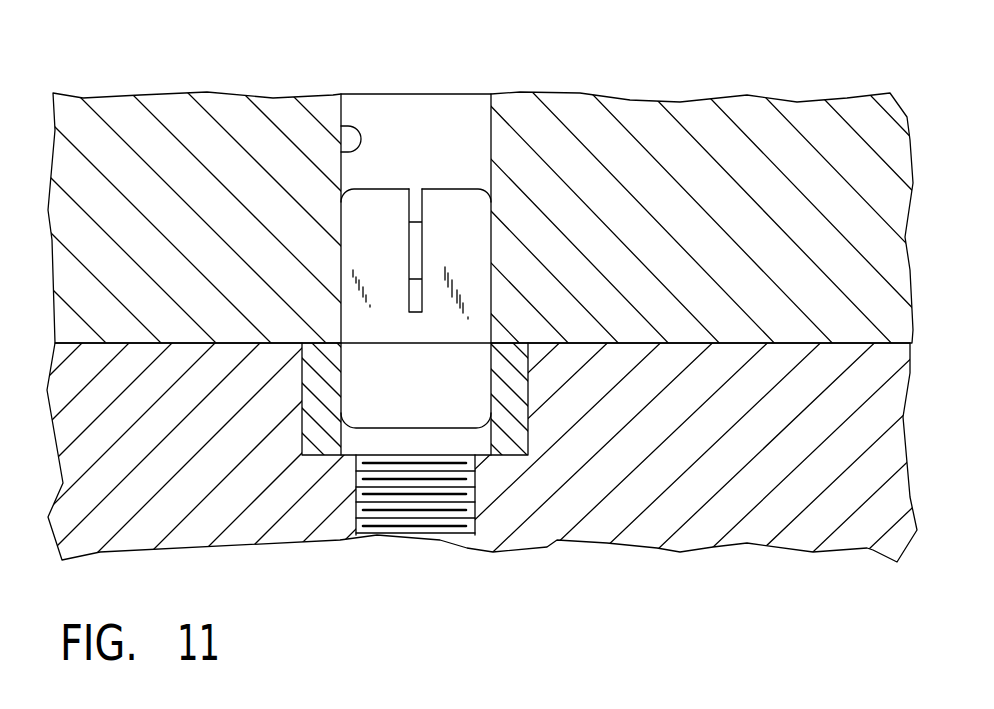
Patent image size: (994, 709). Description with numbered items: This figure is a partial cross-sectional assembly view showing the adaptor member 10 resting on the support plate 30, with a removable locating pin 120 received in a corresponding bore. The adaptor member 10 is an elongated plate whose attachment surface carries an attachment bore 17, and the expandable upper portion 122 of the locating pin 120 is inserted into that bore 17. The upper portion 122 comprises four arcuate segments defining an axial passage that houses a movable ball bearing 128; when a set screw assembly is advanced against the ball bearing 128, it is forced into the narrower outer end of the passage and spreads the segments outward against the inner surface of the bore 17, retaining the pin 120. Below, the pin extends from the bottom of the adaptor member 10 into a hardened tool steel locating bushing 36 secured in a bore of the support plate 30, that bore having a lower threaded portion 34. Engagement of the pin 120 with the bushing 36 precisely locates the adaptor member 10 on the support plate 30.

The adaptor member 10 is at (745, 133).
The support plate 30 is at (707, 523).
The locating bushing 36 is at (320, 447).
The lower threaded portion 34 is at (472, 523).
The expandable upper portion 122 is at (463, 202).
The locating pin 120 is at (455, 379).
The ball bearing 128 is at (415, 220).
The attachment bore 17 is at (335, 120).